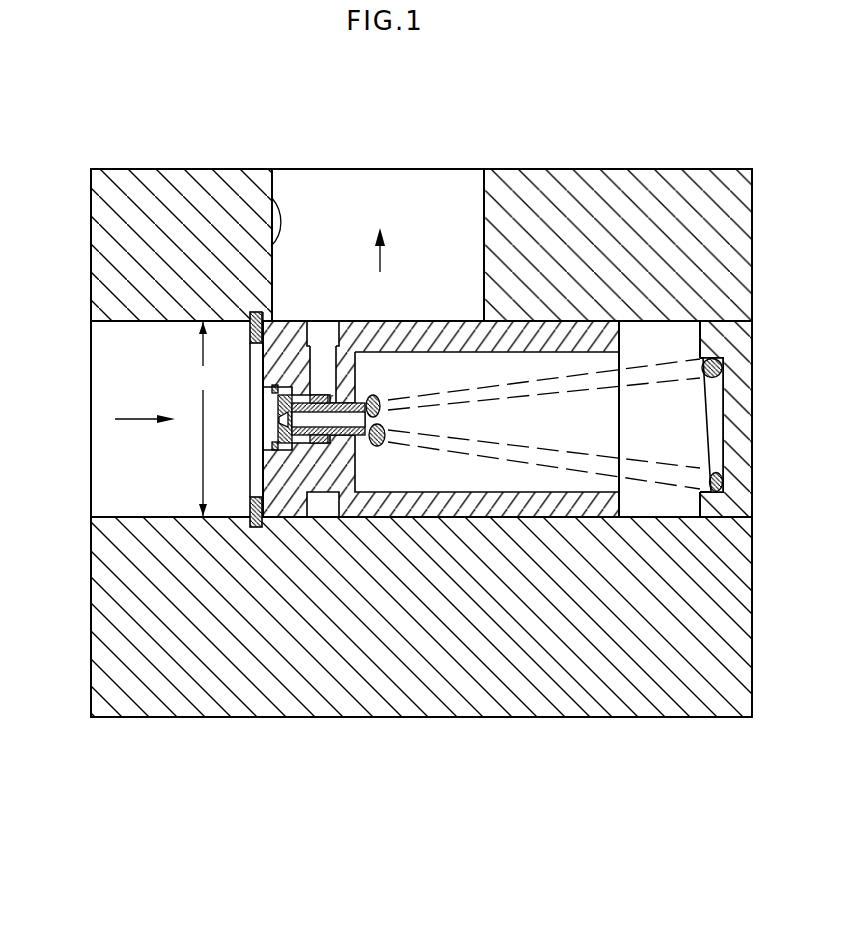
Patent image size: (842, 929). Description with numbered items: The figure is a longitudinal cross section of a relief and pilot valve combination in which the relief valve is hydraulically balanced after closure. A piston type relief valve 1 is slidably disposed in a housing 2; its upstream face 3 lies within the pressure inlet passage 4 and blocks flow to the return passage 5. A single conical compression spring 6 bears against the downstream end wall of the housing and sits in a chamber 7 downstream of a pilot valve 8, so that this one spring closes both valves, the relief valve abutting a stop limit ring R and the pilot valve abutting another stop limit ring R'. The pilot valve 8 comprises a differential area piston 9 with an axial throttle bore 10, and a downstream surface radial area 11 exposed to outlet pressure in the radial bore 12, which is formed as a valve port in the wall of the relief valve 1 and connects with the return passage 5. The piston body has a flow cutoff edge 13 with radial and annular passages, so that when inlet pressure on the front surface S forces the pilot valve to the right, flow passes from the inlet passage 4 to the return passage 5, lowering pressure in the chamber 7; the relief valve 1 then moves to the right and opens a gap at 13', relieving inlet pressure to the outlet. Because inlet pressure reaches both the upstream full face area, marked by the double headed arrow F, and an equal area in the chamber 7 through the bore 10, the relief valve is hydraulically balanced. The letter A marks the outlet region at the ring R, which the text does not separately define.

The piston type relief valve 1 is at (593, 333).
The housing 2 is at (713, 597).
The upstream face 3 is at (282, 466).
The pressure inlet passage 4 is at (128, 419).
The return passage 5 is at (272, 198).
The compression spring 6 is at (704, 360).
The chamber 7 is at (412, 463).
The pilot valve 8 is at (298, 472).
The differential area piston 9 is at (204, 587).
The throttle bore 10 is at (278, 421).
The downstream surface radial area 11 is at (345, 392).
The radial bore 12 is at (319, 362).
The flow cutoff edge 13 is at (304, 252).
The gap 13' is at (301, 399).
The stop limit ring R is at (243, 419).
The stop limit ring R' is at (250, 417).
The front surface S is at (276, 431).
The outlet A is at (258, 491).
The upstream full face radial area F is at (203, 419).